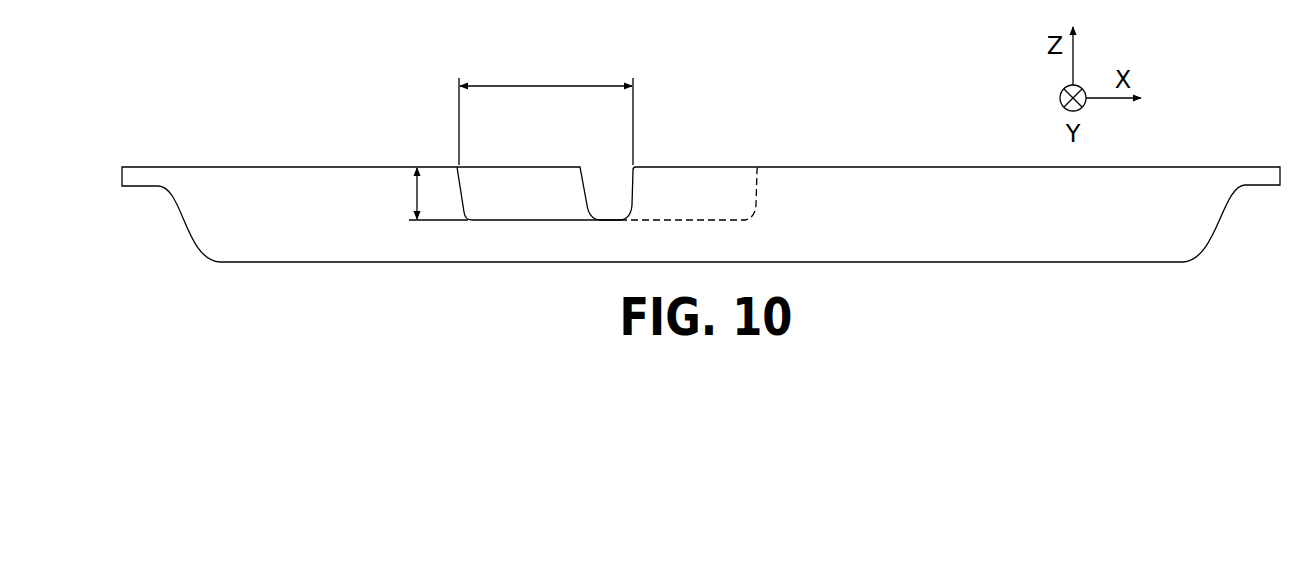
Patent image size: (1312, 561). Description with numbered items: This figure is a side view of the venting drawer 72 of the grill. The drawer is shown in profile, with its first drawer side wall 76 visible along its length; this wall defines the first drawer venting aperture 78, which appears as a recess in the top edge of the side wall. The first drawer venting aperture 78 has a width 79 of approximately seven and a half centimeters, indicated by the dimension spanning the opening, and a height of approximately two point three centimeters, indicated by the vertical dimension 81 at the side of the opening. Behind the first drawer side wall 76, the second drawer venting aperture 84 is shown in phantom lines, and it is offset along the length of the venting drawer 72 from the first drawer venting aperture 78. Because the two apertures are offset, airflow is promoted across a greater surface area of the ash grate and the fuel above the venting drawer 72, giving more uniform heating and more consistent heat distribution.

The venting drawer 72 is at (821, 108).
The first drawer side wall 76 is at (287, 228).
The first drawer venting aperture 78 is at (546, 198).
The width 79 is at (548, 84).
The recess depth 81 is at (413, 194).
The second drawer venting aperture 84 is at (676, 198).